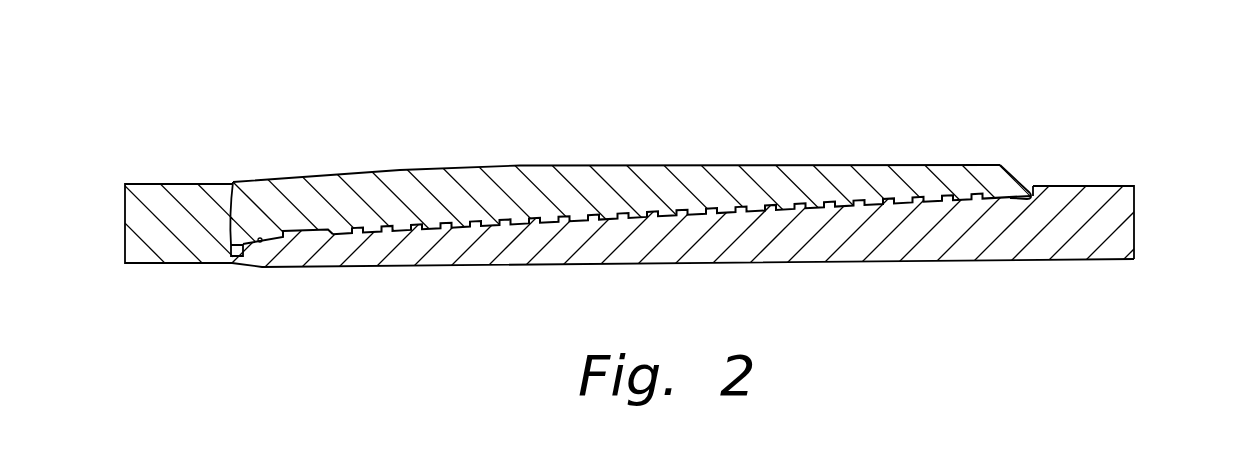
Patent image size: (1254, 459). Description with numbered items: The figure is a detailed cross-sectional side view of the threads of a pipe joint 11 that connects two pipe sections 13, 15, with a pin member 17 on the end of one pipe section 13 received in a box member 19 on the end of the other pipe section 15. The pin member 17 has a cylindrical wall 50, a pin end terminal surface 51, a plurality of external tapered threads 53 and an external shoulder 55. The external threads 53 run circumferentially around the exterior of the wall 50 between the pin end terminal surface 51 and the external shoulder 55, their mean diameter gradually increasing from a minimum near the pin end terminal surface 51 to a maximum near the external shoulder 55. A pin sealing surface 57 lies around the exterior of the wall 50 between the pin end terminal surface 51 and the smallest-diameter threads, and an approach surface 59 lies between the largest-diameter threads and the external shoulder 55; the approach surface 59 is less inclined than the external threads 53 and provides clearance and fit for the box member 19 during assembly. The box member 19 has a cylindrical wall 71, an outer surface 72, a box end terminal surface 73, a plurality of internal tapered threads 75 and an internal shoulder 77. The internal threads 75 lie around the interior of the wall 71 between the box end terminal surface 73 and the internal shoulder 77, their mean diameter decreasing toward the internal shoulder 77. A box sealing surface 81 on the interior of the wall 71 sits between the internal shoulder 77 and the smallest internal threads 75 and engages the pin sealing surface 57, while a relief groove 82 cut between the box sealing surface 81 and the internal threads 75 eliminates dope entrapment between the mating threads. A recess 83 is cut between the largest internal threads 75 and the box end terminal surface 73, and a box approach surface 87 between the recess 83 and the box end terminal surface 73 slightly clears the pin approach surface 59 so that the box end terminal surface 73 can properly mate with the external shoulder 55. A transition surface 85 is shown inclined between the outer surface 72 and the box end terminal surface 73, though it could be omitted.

The pipe joint 11 is at (317, 94).
The pipe section 13 is at (711, 232).
The pipe section 15 is at (125, 228).
The pin member 17 is at (697, 265).
The box member 19 is at (633, 211).
The cylindrical wall 50 is at (561, 252).
The pin end terminal surface 51 is at (231, 256).
The external tapered threads 53 is at (390, 232).
The external shoulder 55 is at (1030, 207).
The pin sealing surface 57 is at (260, 242).
The approach surface 59 is at (958, 205).
The cylindrical wall 71 is at (378, 183).
The outer surface 72 is at (448, 165).
The box end terminal surface 73 is at (1035, 197).
The internal tapered threads 75 is at (782, 212).
The internal shoulder 77 is at (230, 212).
The box sealing surface 81 is at (277, 245).
The relief groove 82 is at (313, 240).
The recess 83 is at (980, 198).
The transition surface 85 is at (1028, 182).
The box approach surface 87 is at (1008, 200).